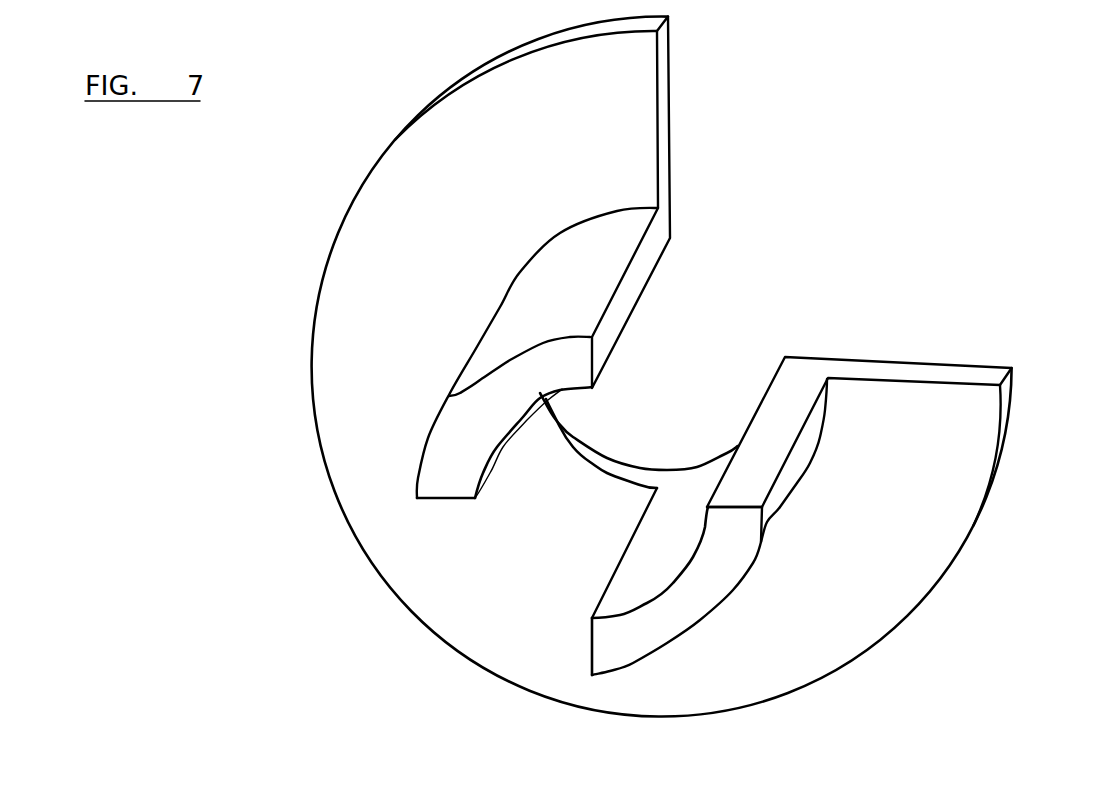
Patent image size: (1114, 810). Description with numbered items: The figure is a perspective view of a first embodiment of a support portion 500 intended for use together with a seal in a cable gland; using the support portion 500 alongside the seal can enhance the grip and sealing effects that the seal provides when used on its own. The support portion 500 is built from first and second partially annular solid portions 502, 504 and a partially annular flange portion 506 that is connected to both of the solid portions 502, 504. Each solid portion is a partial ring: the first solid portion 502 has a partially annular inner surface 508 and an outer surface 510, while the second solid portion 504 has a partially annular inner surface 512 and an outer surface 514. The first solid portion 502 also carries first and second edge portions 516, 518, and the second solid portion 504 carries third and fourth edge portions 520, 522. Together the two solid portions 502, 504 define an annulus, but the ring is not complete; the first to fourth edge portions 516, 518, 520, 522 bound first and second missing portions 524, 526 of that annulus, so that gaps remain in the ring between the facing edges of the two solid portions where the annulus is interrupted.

The support portion 500 is at (921, 634).
The first partially annular solid portion 502 is at (670, 627).
The second partially annular solid portion 504 is at (475, 403).
The partially annular flange portion 506 is at (927, 453).
The partially annular inner surface 508 is at (653, 562).
The outer surface 510 is at (780, 497).
The partially annular inner surface 512 is at (495, 448).
The outer surface 514 is at (540, 300).
The first edge portion 516 is at (591, 647).
The second edge portion 518 is at (797, 403).
The third edge portion 520 is at (445, 499).
The fourth edge portion 522 is at (632, 280).
The first missing portion 524 is at (673, 230).
The second missing portion 526 is at (595, 622).